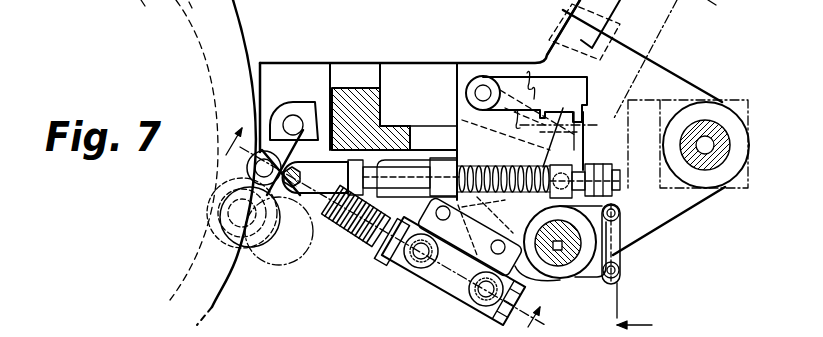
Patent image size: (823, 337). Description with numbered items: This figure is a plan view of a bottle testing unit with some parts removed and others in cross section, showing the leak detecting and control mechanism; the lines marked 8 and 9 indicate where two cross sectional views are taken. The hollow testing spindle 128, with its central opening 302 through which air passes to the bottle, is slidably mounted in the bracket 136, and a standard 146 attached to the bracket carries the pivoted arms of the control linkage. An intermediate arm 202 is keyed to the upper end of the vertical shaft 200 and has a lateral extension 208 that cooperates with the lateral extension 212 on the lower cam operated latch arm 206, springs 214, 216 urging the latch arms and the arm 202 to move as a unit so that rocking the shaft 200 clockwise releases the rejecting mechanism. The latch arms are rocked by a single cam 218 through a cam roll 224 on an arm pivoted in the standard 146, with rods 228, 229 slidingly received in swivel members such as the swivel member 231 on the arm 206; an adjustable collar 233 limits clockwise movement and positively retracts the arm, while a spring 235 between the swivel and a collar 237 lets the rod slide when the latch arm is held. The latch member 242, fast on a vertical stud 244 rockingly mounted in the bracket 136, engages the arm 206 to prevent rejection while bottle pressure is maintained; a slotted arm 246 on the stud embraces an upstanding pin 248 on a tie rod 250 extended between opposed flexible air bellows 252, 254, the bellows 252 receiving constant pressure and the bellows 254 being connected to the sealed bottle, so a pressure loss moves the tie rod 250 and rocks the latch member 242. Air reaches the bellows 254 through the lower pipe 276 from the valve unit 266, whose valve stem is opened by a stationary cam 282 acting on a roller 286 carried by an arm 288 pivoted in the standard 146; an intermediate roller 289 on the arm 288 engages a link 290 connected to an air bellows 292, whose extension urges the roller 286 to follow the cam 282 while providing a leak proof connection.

The section line 8— 8 is at (675, 168).
The section line 9— 9 is at (381, 226).
The spindle 128 is at (732, 155).
The bracket 136 is at (694, 206).
The standard 146 is at (360, 57).
The elongated vertical shaft 200 is at (616, 268).
The arm 202 is at (553, 272).
The lower cam operated latch arm 206 is at (601, 162).
The lateral extension 208 is at (606, 292).
The lateral extension 212 is at (618, 232).
The spring 214 is at (469, 266).
The spring 216 is at (618, 255).
The cam 218 is at (213, 299).
The cam roll 224 is at (254, 258).
The rod 228 is at (445, 285).
The rod 229 is at (388, 176).
The swivel member 231 is at (583, 201).
The adjustable collar 233 is at (602, 183).
The spring 235 is at (431, 138).
The collar 237 is at (429, 190).
The latch member 242 is at (512, 82).
The vertical stud 244 is at (478, 92).
The slotted arm 246 is at (485, 119).
The upstanding pin 248 is at (583, 150).
The tie rod 250 is at (588, 131).
The flexible air bellows 252 is at (482, 163).
The flexible air bellows 254 is at (537, 60).
The valve unit 266 is at (445, 297).
The lower pipe 276 is at (280, 262).
The stationary cam 282 is at (190, 266).
The roller 286 is at (216, 213).
The arm 288 is at (255, 171).
The intermediate roller 289 is at (262, 148).
The link 290 is at (305, 198).
The air bellows 292 is at (357, 252).
The central opening 302 is at (717, 140).